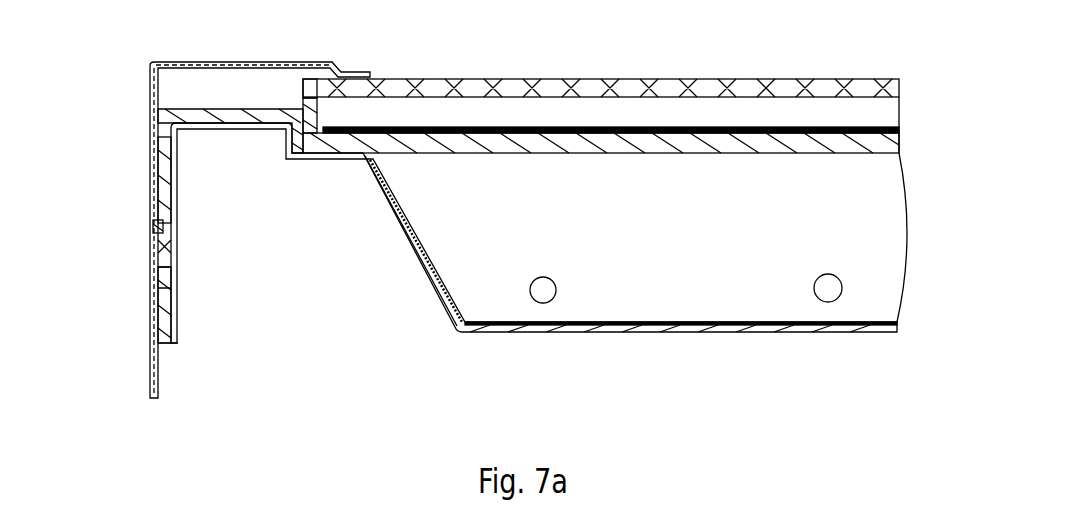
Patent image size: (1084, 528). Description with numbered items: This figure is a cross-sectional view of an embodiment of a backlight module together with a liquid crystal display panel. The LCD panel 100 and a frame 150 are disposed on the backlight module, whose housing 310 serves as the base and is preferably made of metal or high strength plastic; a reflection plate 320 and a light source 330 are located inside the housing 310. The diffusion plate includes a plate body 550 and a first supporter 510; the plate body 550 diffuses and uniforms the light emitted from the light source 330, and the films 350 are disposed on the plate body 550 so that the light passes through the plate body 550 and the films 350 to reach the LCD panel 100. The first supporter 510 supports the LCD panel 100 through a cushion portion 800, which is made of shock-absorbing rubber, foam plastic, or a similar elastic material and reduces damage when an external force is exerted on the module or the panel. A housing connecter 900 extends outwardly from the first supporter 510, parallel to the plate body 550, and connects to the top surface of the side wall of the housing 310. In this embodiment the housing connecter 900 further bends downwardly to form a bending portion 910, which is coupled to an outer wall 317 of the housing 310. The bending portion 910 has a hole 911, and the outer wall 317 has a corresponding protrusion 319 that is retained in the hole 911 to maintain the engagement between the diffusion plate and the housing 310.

The LCD panel 100 is at (505, 85).
The frame 150 is at (157, 62).
The housing 310 is at (433, 292).
The outer wall 317 is at (175, 288).
The protrusion 319 is at (162, 247).
The reflection plate 320 is at (687, 332).
The light source 330 is at (545, 292).
The films 350 is at (746, 127).
The first supporter 510 is at (307, 138).
The plate body 550 is at (487, 140).
The cushion portion 800 is at (306, 96).
The housing connecter 900 is at (223, 109).
The bending portion 910 is at (163, 205).
The hole 911 is at (155, 222).